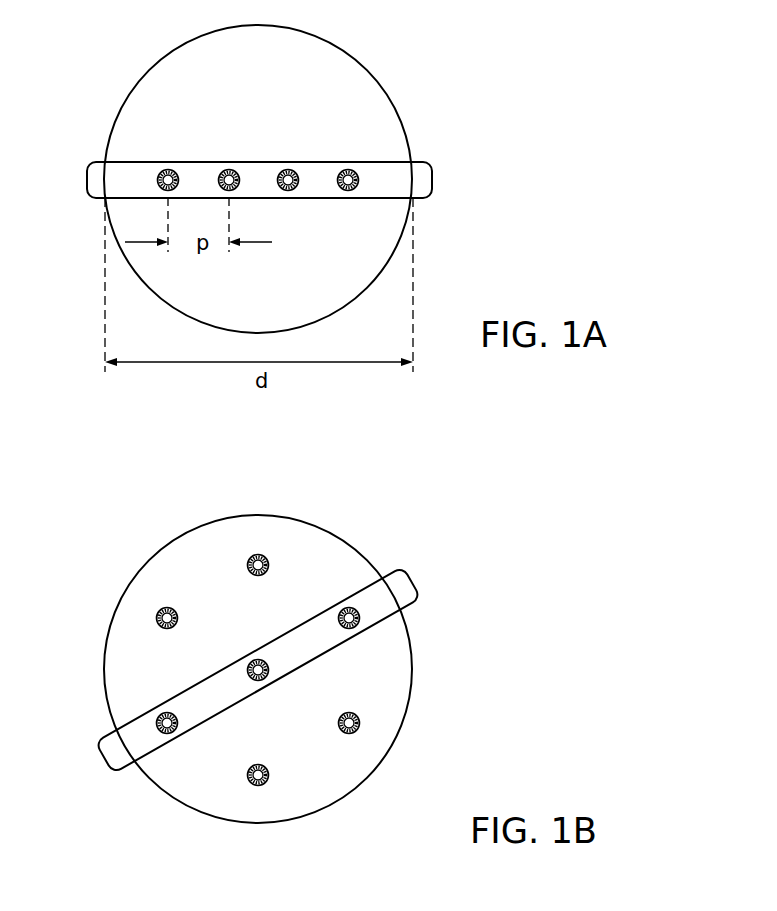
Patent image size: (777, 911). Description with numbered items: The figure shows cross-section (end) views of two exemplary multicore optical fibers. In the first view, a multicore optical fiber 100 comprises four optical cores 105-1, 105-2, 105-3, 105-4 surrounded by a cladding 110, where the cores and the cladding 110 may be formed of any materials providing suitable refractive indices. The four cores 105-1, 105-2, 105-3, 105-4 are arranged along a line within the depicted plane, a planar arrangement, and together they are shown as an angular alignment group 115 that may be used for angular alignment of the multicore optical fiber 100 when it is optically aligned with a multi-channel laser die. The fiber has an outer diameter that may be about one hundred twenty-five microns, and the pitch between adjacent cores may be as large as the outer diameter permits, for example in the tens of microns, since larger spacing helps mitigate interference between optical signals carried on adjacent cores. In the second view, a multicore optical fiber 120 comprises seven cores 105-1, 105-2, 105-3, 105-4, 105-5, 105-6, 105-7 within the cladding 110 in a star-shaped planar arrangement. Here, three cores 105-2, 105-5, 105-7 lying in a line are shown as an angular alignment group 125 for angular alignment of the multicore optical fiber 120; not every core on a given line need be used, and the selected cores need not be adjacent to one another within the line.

In FIG. 1A, the multicore optical fiber 100 is at (382, 32).
In FIG. 1A, the cladding 110 is at (408, 130).
In FIG. 1B, the cladding 110 is at (413, 650).
In FIG. 1A, the angular alignment group 115 is at (432, 185).
In FIG. 1B, the multicore optical fiber 120 is at (377, 476).
In FIG. 1B, the angular alignment group 125 is at (412, 587).
In FIG. 1A, the optical core 105-1 is at (170, 169).
In FIG. 1B, the optical core 105-1 is at (258, 554).
In FIG. 1A, the optical core 105-2 is at (230, 169).
In FIG. 1B, the optical core 105-2 is at (349, 607).
In FIG. 1A, the optical core 105-3 is at (289, 169).
In FIG. 1B, the optical core 105-3 is at (358, 725).
In FIG. 1A, the optical core 105-4 is at (349, 169).
In FIG. 1B, the optical core 105-4 is at (260, 786).
In FIG. 1B, the optical core 105-5 is at (157, 724).
In FIG. 1B, the optical core 105-6 is at (157, 617).
In FIG. 1B, the optical core 105-7 is at (255, 660).